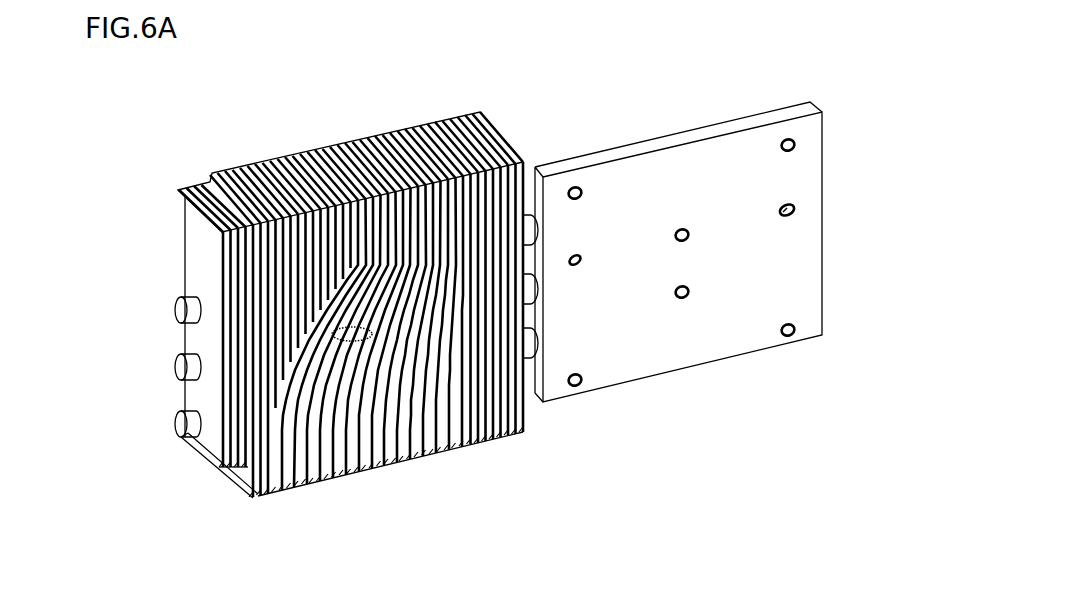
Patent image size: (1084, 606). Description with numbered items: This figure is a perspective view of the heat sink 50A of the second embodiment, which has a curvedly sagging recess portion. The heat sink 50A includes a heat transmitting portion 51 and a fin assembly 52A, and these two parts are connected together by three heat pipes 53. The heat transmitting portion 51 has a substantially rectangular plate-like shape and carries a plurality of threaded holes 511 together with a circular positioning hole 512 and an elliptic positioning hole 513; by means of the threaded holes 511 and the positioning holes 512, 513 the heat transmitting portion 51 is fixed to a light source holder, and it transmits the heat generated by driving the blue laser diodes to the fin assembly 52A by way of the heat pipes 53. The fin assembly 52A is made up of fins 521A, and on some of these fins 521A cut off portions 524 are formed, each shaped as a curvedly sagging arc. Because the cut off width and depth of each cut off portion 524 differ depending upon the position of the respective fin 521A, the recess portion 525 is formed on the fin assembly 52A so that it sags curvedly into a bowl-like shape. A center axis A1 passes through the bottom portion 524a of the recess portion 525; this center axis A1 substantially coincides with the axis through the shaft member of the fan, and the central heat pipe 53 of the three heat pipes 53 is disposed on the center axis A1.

The heat sink 50A is at (548, 70).
The heat transmitting portion 51 is at (732, 128).
The threaded holes 511 is at (576, 187).
The circular positioning hole 512 is at (577, 265).
The elliptic positioning hole 513 is at (798, 208).
The fin assembly 52A is at (277, 158).
The fins 521A is at (187, 245).
The heat pipes 53 is at (180, 310).
The cut off portions 524 is at (283, 373).
The bottom portion 524a is at (392, 440).
The recess portion 525 is at (355, 418).
The center axis A1 is at (367, 333).